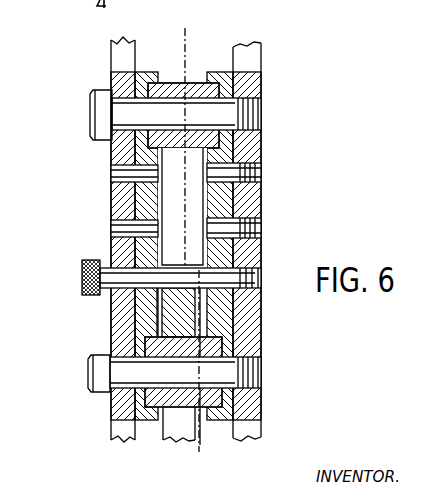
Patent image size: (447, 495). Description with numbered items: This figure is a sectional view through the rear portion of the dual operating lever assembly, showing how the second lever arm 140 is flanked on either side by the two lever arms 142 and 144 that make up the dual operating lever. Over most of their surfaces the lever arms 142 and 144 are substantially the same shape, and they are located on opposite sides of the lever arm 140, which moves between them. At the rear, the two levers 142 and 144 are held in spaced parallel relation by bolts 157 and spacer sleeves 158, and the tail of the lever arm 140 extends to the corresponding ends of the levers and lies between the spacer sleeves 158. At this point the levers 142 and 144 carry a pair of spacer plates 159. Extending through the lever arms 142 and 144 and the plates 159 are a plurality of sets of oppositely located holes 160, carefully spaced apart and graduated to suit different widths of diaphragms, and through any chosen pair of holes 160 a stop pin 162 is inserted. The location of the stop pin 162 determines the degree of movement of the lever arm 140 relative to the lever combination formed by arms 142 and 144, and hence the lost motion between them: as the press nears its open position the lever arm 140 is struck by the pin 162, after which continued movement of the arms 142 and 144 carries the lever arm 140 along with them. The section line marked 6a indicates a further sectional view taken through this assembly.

The second lever arm 140 is at (168, 434).
The lever arm 142 is at (250, 327).
The lever arm 144 is at (110, 326).
The bolts 157 is at (258, 112).
The spacer sleeves 158 is at (196, 83).
The spacer plates 159 is at (116, 195).
The holes 160 is at (258, 178).
The stop pin 162 is at (81, 278).
The section line 6a is at (196, 31).